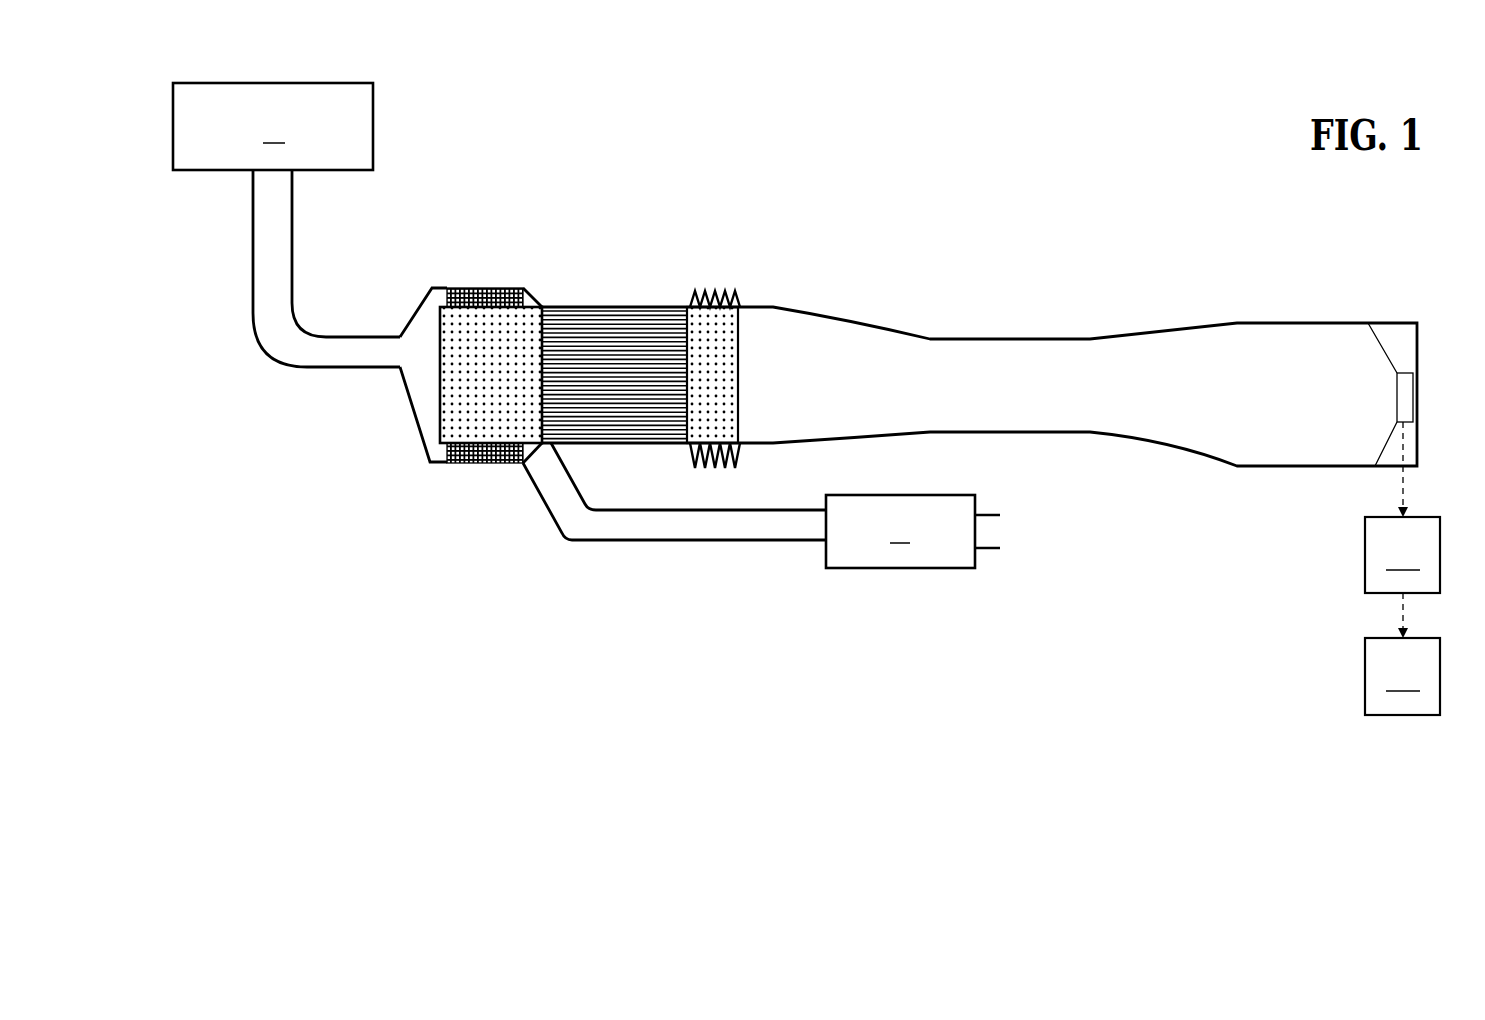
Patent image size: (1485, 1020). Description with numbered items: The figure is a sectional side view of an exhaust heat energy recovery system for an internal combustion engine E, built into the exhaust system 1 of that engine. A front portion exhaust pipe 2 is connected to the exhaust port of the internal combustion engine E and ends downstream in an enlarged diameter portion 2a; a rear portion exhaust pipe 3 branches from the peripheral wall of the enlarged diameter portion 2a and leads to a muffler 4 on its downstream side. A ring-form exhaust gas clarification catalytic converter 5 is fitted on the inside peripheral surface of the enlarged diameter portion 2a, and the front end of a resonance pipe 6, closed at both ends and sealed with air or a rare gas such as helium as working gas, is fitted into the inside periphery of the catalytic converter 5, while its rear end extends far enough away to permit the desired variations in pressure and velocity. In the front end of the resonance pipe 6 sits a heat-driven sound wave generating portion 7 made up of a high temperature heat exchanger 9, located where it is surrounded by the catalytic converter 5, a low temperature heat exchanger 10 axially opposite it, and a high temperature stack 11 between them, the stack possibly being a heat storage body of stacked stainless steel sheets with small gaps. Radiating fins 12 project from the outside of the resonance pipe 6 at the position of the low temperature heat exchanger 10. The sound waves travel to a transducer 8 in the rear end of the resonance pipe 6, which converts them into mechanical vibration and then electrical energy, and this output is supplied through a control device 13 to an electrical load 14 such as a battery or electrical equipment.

The exhaust system 1 is at (876, 260).
The front portion exhaust pipe 2 is at (268, 288).
The enlarged diameter portion 2a is at (443, 285).
The rear portion exhaust pipe 3 is at (717, 530).
The muffler 4 is at (913, 531).
The exhaust gas clarification catalytic converter 5 is at (495, 288).
The resonance pipe 6 is at (965, 340).
The sound wave generating portion 7 is at (553, 211).
The transducer 8 is at (1403, 380).
The high temperature heat exchanger 9 is at (518, 363).
The low temperature heat exchanger 10 is at (712, 338).
The high temperature stack 11 is at (627, 345).
The radiating fins 12 is at (731, 467).
The control device 13 is at (1402, 576).
The electrical load 14 is at (1402, 676).
The internal combustion engine E is at (273, 126).